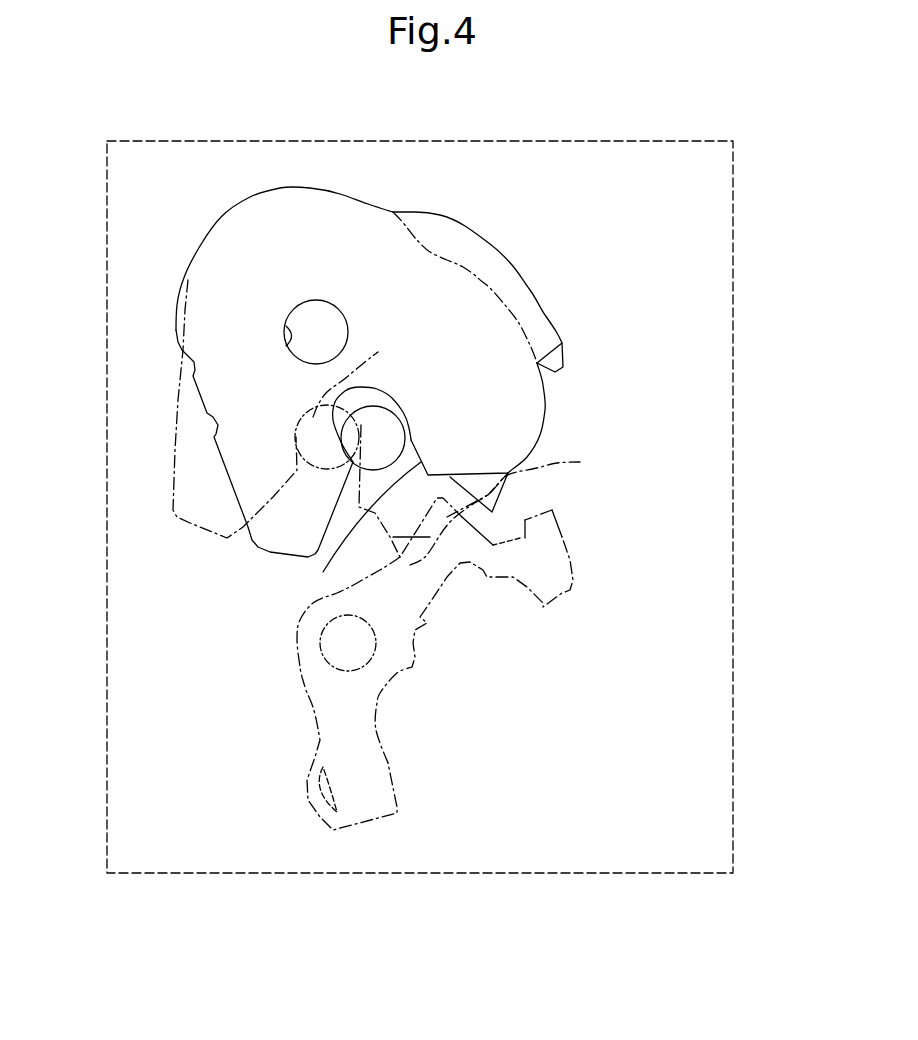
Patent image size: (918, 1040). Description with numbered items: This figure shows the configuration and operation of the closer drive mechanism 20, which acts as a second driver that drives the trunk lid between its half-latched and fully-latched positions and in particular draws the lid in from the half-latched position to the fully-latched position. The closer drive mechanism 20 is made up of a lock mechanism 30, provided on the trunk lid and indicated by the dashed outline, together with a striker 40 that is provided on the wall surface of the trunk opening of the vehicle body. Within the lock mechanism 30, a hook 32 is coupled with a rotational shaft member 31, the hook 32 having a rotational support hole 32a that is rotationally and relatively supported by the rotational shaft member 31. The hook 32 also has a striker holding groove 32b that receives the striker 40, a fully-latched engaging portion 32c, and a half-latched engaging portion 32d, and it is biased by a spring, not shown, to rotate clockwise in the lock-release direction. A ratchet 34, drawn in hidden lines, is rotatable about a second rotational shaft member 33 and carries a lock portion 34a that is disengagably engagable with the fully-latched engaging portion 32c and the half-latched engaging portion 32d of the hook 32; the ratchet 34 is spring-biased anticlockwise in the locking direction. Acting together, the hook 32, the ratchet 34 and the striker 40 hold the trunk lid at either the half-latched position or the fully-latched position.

The closer drive mechanism 20 is at (750, 283).
The lock mechanism 30 is at (131, 823).
The rotational shaft member 31 is at (330, 320).
The hook 32 is at (522, 485).
The rotational support hole 32a is at (291, 338).
The striker holding groove 32b is at (323, 572).
The fully-latched engaging portion 32c is at (493, 512).
The half-latched engaging portion 32d is at (565, 355).
The rotational shaft member 33 is at (337, 653).
The ratchet 34 is at (418, 612).
The lock portion 34a is at (518, 506).
The striker 40 is at (372, 425).